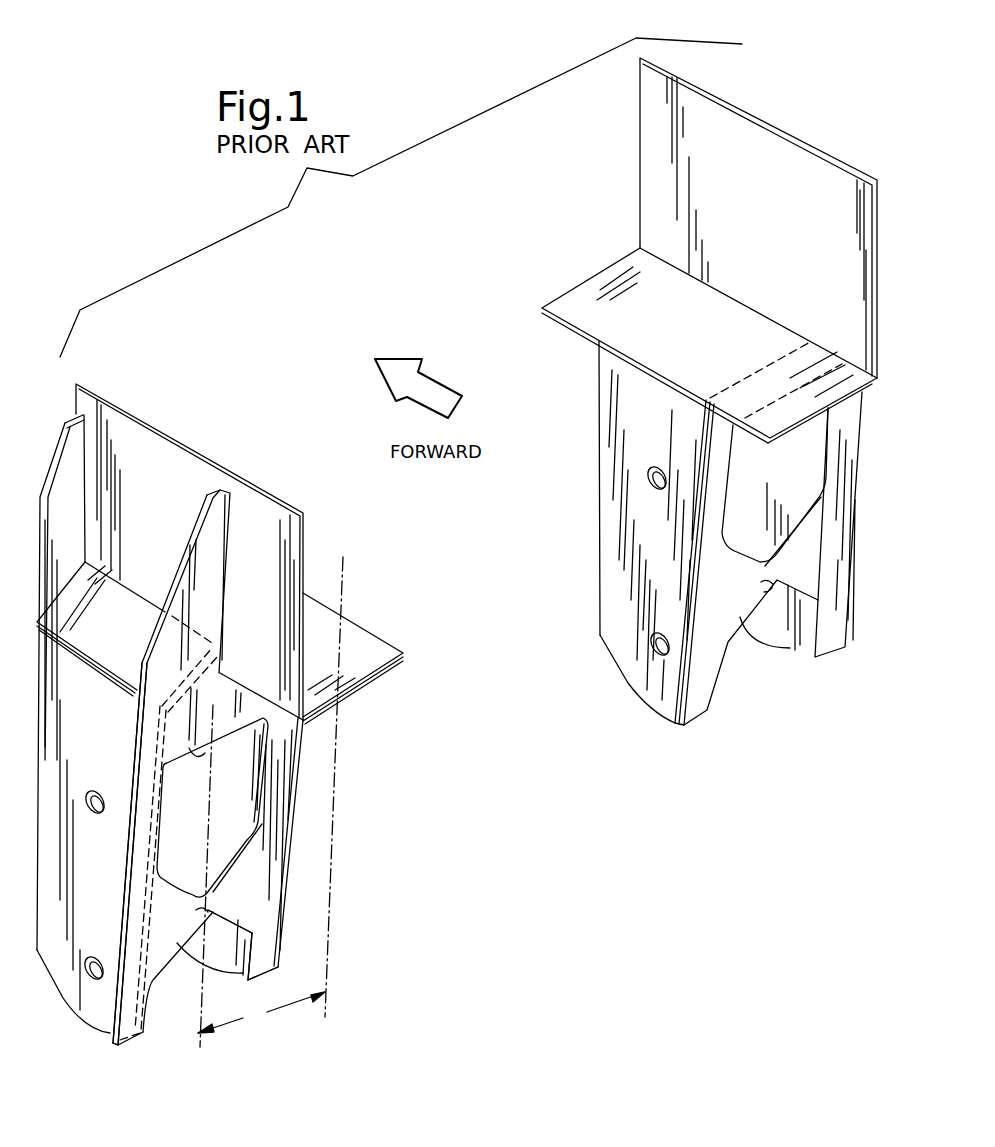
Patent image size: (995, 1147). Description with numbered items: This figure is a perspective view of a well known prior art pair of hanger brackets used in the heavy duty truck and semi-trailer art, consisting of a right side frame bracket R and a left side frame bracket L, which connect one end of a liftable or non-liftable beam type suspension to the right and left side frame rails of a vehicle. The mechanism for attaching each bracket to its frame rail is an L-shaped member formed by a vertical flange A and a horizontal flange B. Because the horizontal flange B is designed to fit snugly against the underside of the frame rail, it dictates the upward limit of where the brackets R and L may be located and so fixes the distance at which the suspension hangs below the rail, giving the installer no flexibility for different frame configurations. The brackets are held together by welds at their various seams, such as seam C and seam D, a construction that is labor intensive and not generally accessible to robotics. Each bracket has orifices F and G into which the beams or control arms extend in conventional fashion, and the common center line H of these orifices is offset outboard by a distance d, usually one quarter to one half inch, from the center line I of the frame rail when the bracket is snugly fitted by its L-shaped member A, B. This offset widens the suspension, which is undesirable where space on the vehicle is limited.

The left side frame bracket L is at (157, 380).
The right side frame bracket R is at (594, 244).
The vertical flange A is at (146, 511).
The horizontal flange B is at (365, 645).
The seam C is at (147, 873).
The seam D is at (227, 560).
The orifice F is at (237, 827).
The orifice G is at (240, 945).
The center line of orifices H is at (207, 805).
The center line of frame rail I is at (337, 765).
The offset distance d is at (261, 1012).